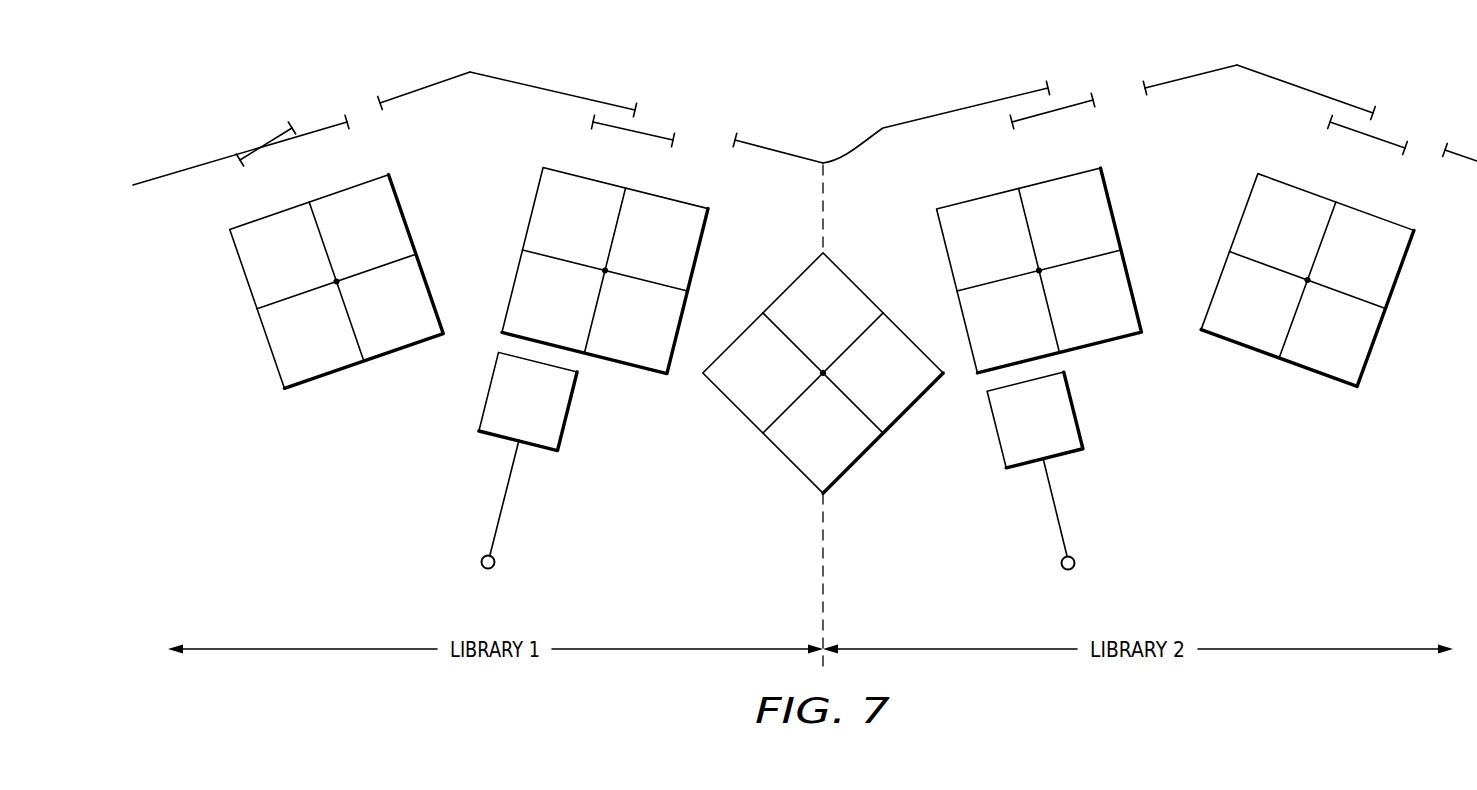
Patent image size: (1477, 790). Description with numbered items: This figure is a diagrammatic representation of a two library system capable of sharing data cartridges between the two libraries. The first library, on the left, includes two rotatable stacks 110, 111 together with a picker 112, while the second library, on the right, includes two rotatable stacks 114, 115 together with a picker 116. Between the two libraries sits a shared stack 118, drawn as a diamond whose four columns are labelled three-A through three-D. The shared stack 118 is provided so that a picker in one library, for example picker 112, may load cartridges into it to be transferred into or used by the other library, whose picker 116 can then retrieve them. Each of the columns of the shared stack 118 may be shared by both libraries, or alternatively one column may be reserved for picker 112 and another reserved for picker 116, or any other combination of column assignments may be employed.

The rotatable stack 110 is at (400, 198).
The rotatable stack 111 is at (525, 235).
The picker 112 is at (573, 412).
The rotatable stack 114 is at (1120, 232).
The rotatable stack 115 is at (1245, 197).
The picker 116 is at (1078, 409).
The shared stack 118 is at (898, 326).